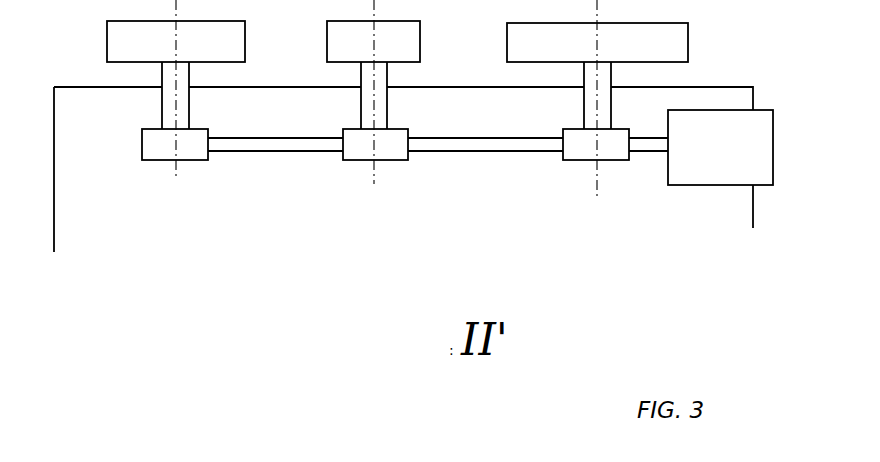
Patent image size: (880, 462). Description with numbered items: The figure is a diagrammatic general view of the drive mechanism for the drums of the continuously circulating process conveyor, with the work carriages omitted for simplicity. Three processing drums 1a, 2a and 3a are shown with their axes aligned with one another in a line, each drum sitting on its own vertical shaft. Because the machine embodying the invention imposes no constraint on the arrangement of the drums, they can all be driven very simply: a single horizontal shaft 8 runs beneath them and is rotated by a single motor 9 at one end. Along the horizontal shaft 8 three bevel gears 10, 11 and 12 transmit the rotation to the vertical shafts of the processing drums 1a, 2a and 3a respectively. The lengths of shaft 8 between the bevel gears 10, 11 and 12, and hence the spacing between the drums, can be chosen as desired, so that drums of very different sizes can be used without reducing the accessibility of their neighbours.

The processing drum 1a is at (176, 75).
The processing drum 2a is at (373, 75).
The processing drum 3a is at (597, 76).
The horizontal shaft 8 is at (298, 145).
The motor 9 is at (713, 173).
The bevel gear 10 is at (193, 152).
The bevel gear 11 is at (365, 150).
The bevel gear 12 is at (582, 153).